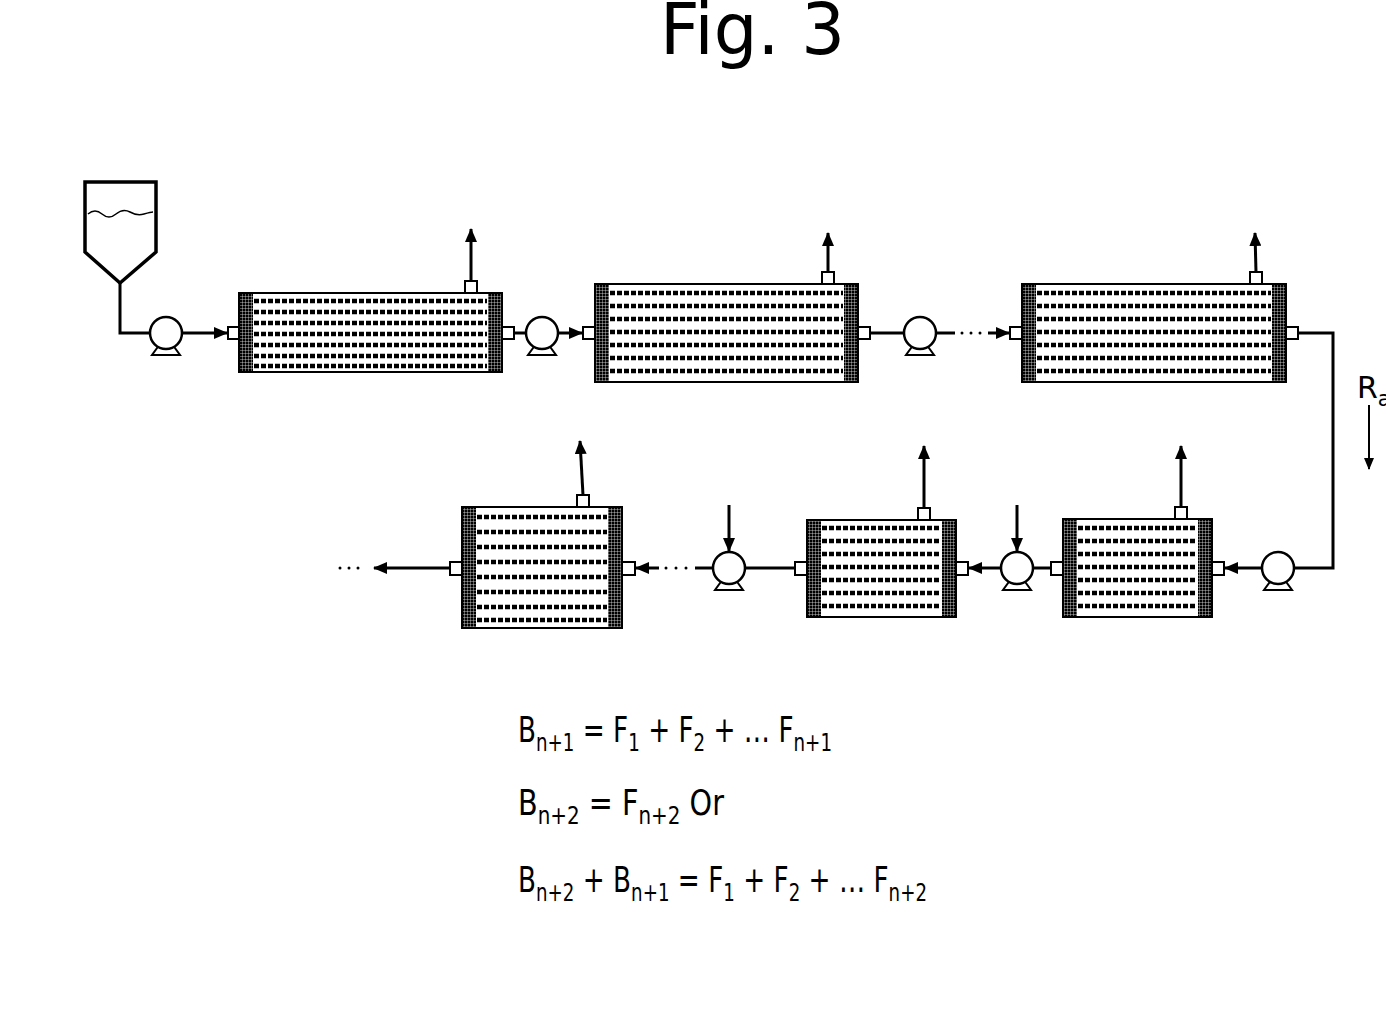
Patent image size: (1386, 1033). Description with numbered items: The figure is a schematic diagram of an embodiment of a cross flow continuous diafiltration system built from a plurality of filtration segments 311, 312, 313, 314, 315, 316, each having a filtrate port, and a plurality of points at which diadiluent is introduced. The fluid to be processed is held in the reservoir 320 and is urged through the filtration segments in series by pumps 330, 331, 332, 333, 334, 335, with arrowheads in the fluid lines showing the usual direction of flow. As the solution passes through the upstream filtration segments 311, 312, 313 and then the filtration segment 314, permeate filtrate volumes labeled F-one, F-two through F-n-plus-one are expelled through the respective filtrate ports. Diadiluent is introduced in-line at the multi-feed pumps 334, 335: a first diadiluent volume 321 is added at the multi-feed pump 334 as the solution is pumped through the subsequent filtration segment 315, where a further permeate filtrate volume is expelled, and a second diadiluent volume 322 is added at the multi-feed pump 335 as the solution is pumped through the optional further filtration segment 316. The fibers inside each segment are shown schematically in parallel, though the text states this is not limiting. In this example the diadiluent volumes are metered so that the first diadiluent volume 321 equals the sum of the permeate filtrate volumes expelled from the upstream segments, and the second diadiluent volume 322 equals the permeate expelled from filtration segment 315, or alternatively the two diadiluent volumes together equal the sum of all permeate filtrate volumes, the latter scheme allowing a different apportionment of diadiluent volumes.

The filtration segment 311 is at (297, 291).
The filtration segment 312 is at (656, 283).
The filtration segment 313 is at (1069, 283).
The filtration segment 314 is at (1107, 518).
The filtration segment 315 is at (842, 519).
The filtration segment 316 is at (488, 506).
The reservoir R1 320 is at (174, 188).
The diadiluent Bn+1 321 is at (993, 460).
The diadiluent Bn+2 322 is at (713, 460).
The pump 330 is at (166, 358).
The pump 331 is at (542, 315).
The pump 332 is at (920, 315).
The pump 333 is at (1280, 593).
The multi-feed pump 334 is at (1018, 593).
The multi-feed pump 335 is at (729, 593).